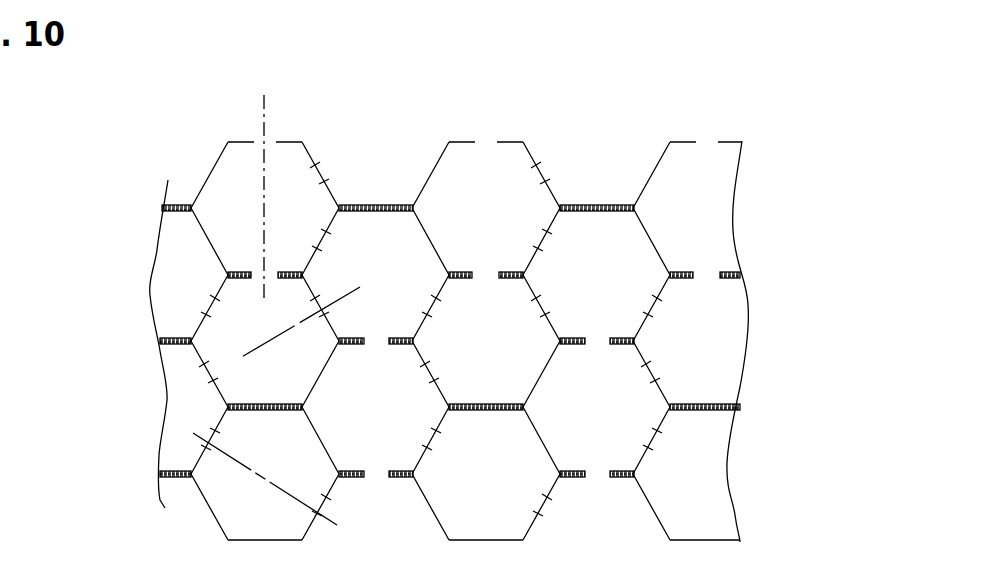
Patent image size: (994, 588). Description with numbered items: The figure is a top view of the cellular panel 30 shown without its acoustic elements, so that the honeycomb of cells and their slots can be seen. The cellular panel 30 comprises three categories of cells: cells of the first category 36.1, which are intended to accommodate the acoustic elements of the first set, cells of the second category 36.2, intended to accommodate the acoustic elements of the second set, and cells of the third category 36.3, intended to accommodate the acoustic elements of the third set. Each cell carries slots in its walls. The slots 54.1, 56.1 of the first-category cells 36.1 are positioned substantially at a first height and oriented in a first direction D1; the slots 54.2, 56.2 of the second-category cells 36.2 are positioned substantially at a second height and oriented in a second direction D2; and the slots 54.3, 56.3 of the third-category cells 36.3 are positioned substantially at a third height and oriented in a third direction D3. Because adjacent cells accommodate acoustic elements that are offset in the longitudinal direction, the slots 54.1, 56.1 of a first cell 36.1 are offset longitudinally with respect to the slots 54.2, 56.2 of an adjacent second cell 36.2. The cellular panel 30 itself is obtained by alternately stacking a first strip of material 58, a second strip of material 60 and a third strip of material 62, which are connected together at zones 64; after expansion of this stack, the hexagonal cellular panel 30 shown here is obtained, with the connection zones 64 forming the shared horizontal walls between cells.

The cellular panel 30 is at (182, 143).
The first strip of material 58 is at (215, 153).
The second strip of material 60 is at (193, 224).
The third strip of material 62 is at (220, 282).
The zones 64 is at (181, 204).
The slot 54.1 is at (272, 140).
The slot 54.2 is at (307, 312).
The slot 54.3 is at (322, 243).
The slot 56.1 is at (264, 270).
The slot 56.2 is at (320, 166).
The slot 56.3 is at (430, 313).
The cell of the first category 36.1 is at (474, 282).
The cell of the second category 36.2 is at (496, 267).
The cell of the third category 36.3 is at (457, 401).
The first direction D1 is at (262, 117).
The second direction D2 is at (232, 358).
The third direction D3 is at (222, 452).